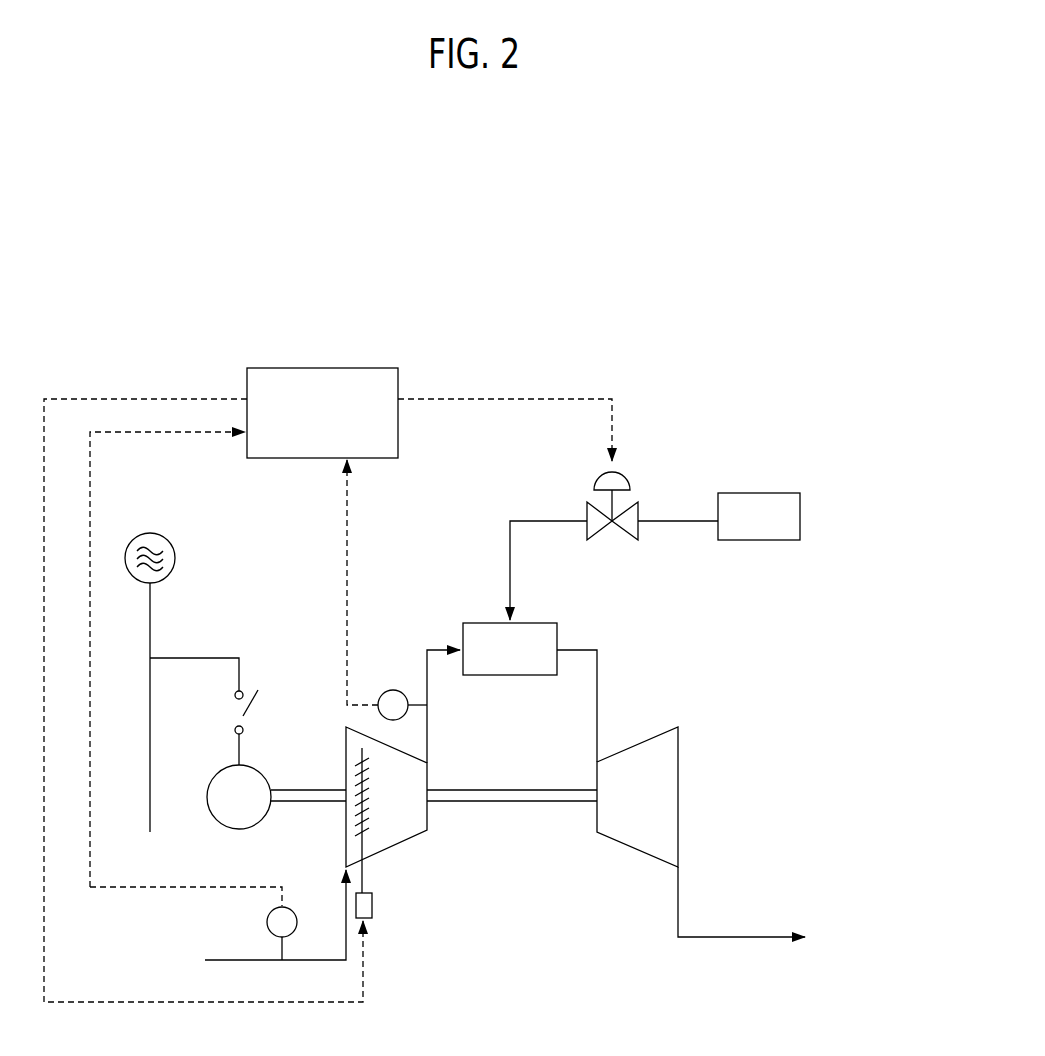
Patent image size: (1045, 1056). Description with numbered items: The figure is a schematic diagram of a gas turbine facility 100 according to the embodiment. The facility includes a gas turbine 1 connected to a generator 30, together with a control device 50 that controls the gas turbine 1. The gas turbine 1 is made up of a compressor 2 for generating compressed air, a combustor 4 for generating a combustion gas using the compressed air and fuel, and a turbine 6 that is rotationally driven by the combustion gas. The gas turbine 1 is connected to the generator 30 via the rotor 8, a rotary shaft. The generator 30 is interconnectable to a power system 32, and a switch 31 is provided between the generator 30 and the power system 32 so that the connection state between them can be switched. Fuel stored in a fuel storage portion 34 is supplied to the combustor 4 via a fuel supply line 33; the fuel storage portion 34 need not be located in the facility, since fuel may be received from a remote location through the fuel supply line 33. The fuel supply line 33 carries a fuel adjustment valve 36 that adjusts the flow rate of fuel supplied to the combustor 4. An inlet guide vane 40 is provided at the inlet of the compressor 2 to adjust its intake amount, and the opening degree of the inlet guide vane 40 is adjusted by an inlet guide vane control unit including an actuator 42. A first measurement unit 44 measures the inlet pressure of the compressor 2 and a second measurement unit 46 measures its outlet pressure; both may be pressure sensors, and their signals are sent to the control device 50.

The gas turbine facility 100 is at (756, 327).
The gas turbine 1 is at (738, 627).
The compressor 2 is at (402, 846).
The combustor 4 is at (552, 623).
The turbine 6 is at (668, 727).
The rotor 8 is at (520, 802).
The generator 30 is at (263, 771).
The switch 31 is at (258, 705).
The power system 32 is at (152, 533).
The fuel supply line 33 is at (678, 522).
The fuel storage portion 34 is at (762, 493).
The fuel adjustment valve 36 is at (626, 481).
The inlet guide vane 40 is at (362, 756).
The actuator 42 is at (372, 905).
The first measurement unit 44 is at (267, 922).
The second measurement unit 46 is at (393, 690).
The control device 50 is at (368, 368).